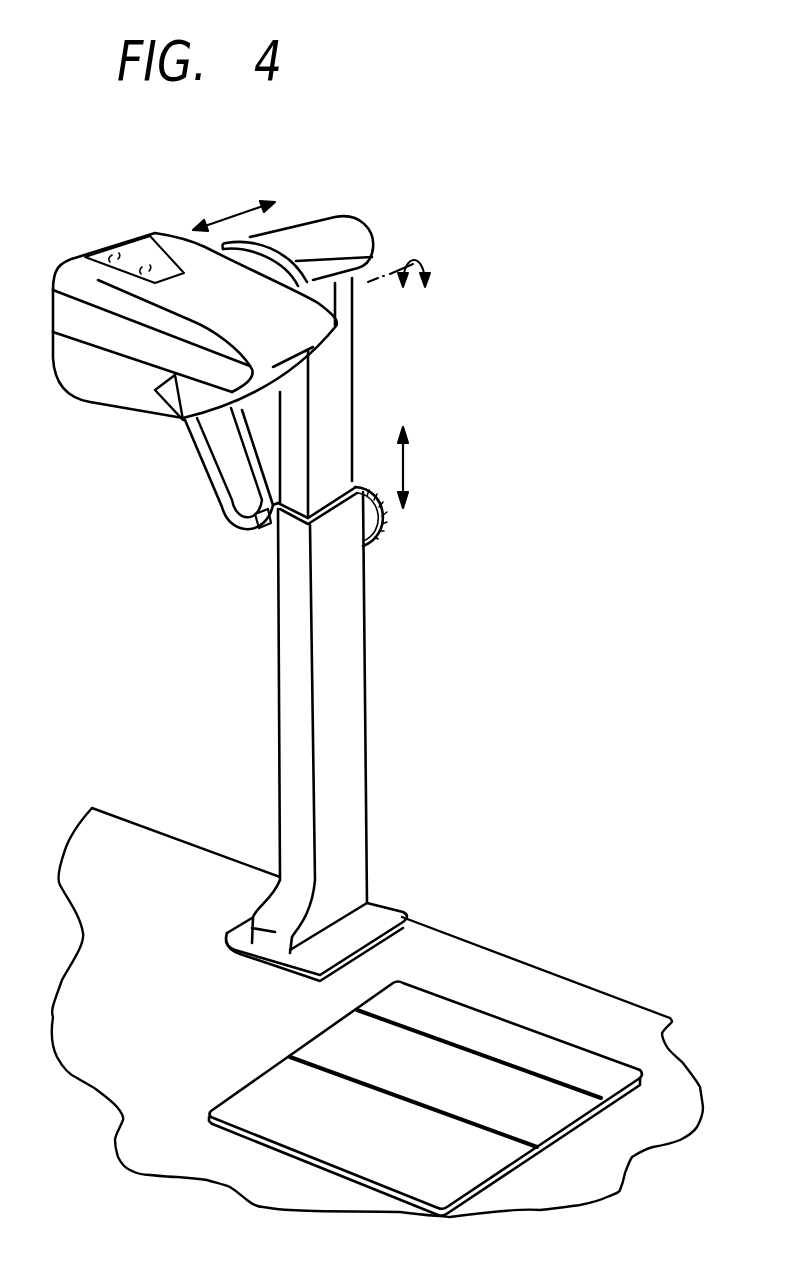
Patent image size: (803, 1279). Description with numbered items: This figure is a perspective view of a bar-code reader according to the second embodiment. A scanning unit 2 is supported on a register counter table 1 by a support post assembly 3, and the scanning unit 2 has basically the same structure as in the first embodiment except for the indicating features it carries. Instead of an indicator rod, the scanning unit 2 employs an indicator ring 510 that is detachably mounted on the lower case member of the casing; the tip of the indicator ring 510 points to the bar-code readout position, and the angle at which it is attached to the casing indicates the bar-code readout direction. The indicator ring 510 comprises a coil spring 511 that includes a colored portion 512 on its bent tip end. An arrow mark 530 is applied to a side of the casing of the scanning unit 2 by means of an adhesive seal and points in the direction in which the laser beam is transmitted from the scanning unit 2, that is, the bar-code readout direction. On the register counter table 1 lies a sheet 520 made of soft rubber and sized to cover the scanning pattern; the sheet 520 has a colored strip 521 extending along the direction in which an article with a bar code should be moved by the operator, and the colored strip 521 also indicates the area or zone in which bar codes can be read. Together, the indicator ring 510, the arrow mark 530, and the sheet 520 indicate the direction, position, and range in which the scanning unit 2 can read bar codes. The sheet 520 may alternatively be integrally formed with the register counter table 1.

The register counter table 1 is at (135, 847).
The scanning unit 2 is at (165, 217).
The support post assembly 3 is at (372, 602).
The indicator ring 510 is at (210, 493).
The coil spring 511 is at (223, 507).
The colored portion 512 is at (267, 533).
The sheet 520 is at (543, 1037).
The colored strip 521 is at (557, 1105).
The arrow mark 530 is at (165, 400).